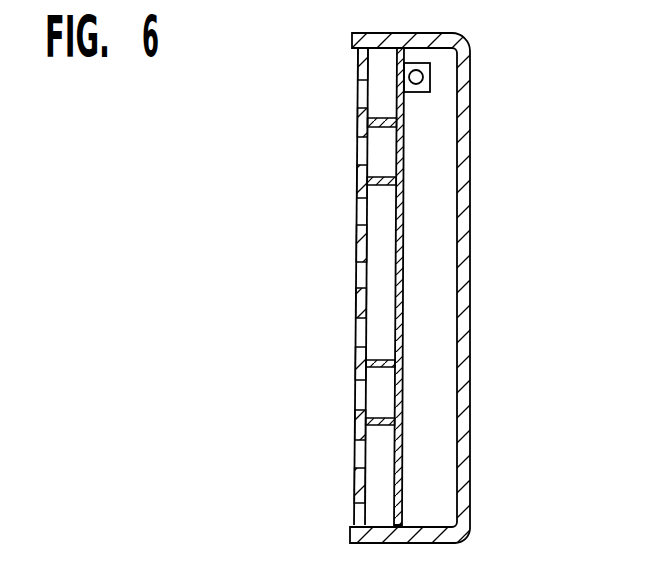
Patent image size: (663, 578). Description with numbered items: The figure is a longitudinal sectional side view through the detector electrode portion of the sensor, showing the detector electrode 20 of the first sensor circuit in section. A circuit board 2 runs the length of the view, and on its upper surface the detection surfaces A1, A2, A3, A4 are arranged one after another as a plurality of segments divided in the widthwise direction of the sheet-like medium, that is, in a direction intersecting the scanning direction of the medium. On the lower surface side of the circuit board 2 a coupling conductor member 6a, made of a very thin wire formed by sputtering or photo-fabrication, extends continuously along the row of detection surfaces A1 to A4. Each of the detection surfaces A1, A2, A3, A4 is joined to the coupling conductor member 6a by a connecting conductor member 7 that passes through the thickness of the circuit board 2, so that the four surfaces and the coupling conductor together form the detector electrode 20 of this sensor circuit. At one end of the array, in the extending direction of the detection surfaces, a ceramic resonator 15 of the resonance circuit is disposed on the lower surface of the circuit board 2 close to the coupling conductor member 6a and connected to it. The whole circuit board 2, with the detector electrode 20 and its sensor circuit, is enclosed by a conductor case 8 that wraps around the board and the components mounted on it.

The circuit board 2 is at (390, 163).
The coupling conductor member 6a is at (403, 287).
The connecting conductor member 7 is at (401, 283).
The conductor case 8 is at (458, 343).
The ceramic resonator 15 is at (427, 92).
The detector electrode 20 is at (393, 288).
The detection surface A1 is at (358, 125).
The detection surface A2 is at (358, 189).
The detection surface A3 is at (355, 361).
The detection surface A4 is at (355, 424).